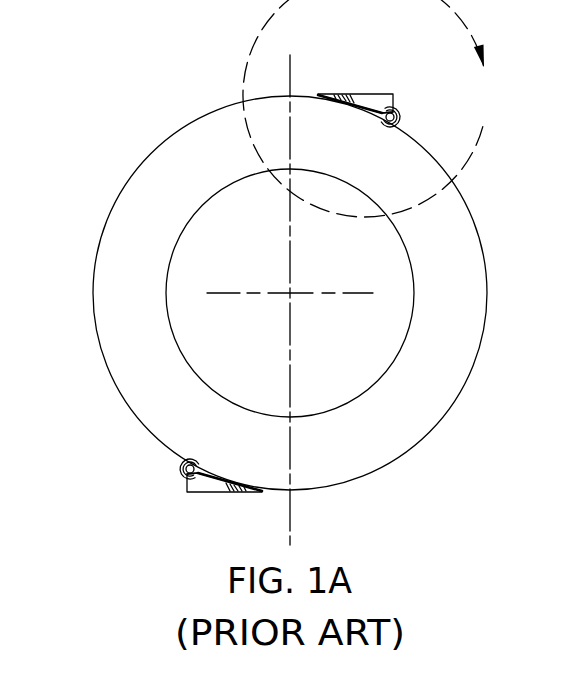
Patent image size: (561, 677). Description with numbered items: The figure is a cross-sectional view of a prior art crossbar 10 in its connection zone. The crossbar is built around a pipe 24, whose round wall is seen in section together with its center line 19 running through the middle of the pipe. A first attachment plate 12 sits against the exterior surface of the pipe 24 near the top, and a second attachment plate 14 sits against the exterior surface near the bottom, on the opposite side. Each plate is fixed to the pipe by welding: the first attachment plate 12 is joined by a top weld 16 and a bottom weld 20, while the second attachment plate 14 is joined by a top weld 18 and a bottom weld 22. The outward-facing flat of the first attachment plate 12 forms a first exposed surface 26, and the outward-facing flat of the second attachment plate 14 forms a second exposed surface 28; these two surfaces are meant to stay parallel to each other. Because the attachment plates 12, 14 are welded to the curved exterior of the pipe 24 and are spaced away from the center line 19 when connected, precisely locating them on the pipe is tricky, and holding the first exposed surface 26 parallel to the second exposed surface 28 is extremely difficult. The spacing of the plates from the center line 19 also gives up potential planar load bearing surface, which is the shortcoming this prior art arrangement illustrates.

The prior art crossbar 10 is at (126, 114).
The first attachment plate 12 is at (402, 110).
The second attachment plate 14 is at (187, 486).
The top weld 16 is at (345, 92).
The top weld 18 is at (277, 500).
The center line 19 is at (290, 368).
The bottom weld 20 is at (405, 123).
The bottom weld 22 is at (178, 466).
The pipe 24 is at (468, 287).
The first exposed surface 26 is at (368, 93).
The second exposed surface 28 is at (210, 493).